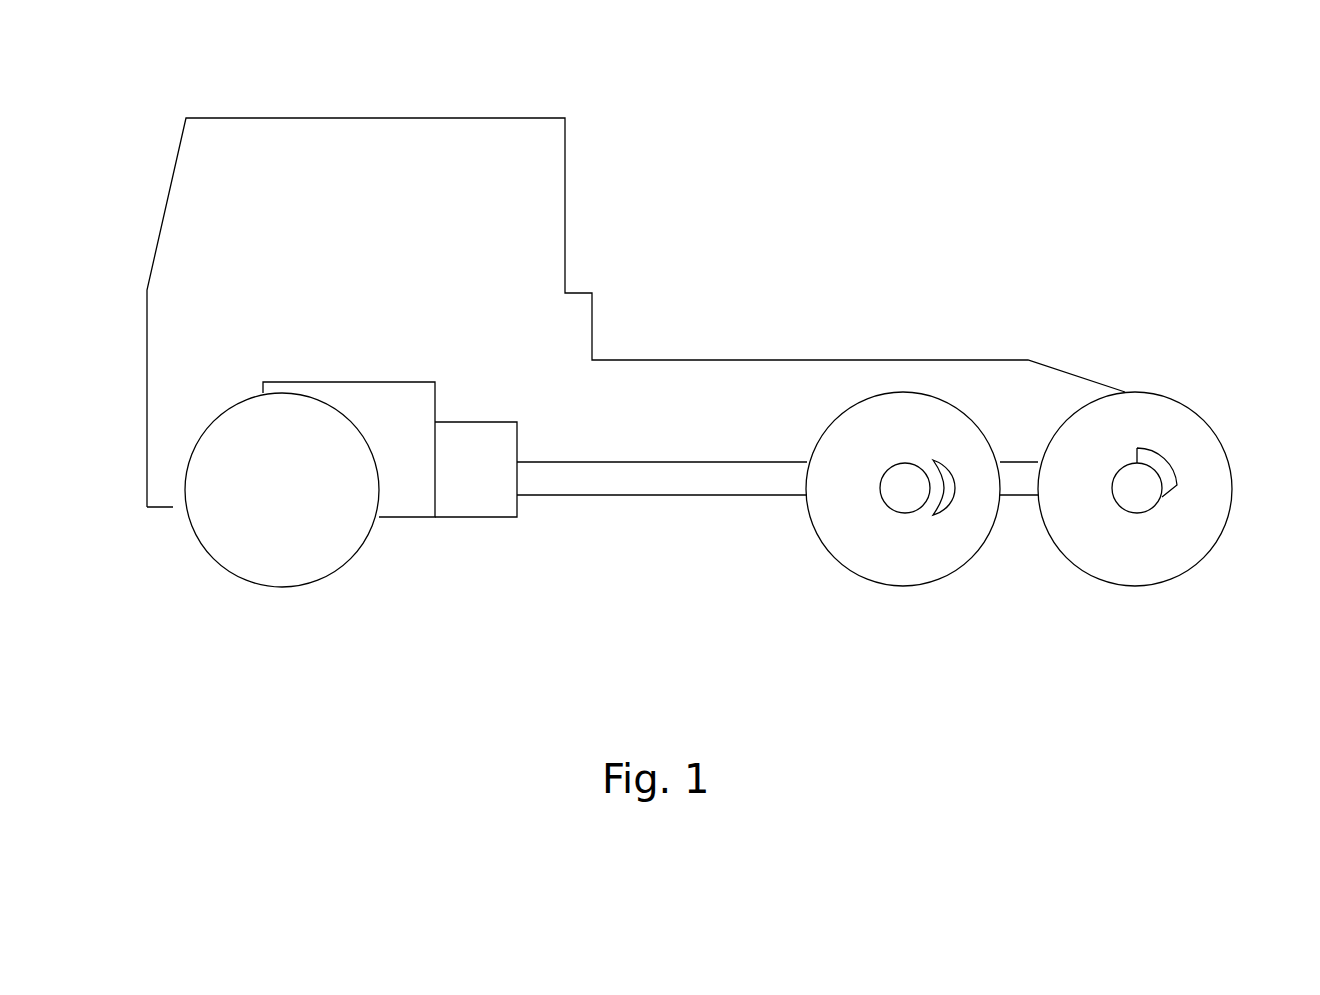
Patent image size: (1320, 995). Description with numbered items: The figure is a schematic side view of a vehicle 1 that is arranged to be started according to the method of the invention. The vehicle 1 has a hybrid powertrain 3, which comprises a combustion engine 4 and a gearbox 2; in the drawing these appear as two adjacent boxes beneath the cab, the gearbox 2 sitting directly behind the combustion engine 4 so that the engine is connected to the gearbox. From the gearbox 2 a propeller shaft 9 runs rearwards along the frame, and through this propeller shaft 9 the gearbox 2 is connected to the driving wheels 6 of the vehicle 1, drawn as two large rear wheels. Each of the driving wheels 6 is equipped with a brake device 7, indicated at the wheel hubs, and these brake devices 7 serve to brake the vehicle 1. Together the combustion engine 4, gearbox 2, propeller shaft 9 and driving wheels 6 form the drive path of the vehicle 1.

The vehicle 1 is at (687, 100).
The gearbox 2 is at (513, 519).
The hybrid powertrain 3 is at (452, 558).
The combustion engine 4 is at (314, 381).
The driving wheels 6 is at (955, 568).
The brake devices 7 is at (932, 462).
The propeller shaft 9 is at (640, 497).